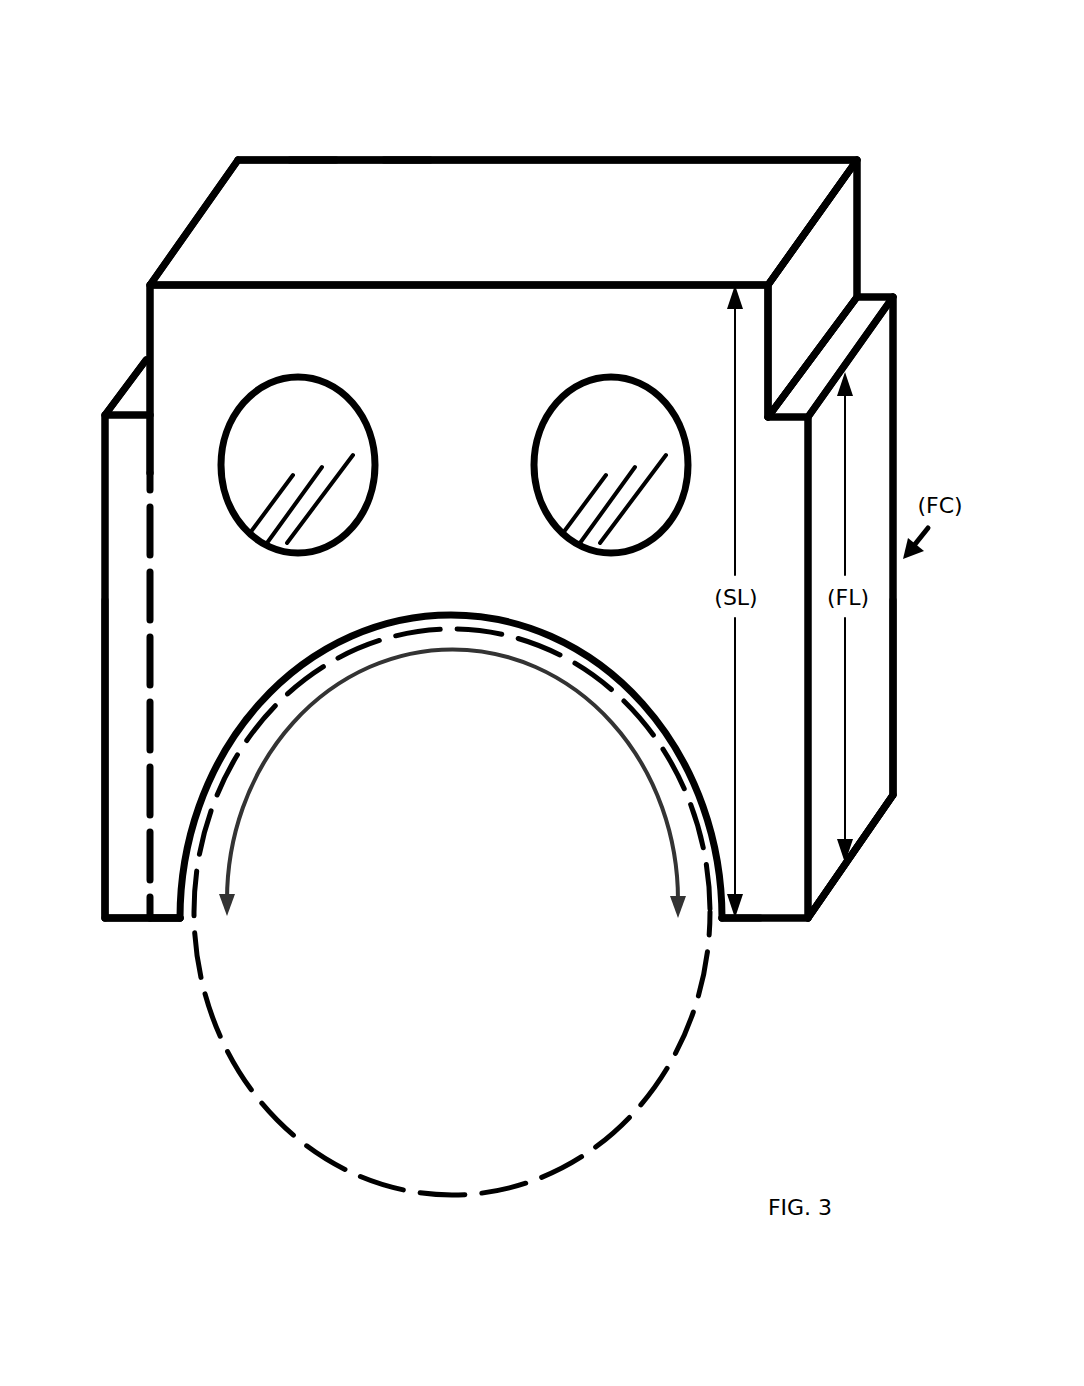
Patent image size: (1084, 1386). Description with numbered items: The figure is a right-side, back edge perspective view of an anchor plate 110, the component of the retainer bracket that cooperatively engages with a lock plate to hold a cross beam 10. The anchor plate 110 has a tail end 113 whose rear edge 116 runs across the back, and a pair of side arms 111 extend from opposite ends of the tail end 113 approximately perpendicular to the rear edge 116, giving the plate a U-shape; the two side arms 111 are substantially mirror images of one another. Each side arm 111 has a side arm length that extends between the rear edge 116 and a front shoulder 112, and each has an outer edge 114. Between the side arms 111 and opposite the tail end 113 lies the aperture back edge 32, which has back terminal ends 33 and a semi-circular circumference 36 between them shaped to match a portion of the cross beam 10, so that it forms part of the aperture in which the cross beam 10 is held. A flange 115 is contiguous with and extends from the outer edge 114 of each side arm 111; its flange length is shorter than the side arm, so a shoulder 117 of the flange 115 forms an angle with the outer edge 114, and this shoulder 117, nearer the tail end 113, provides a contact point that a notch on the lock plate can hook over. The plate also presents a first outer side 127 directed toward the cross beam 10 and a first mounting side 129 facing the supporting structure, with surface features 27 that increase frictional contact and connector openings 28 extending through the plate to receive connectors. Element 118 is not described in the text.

The cross beam 10 is at (685, 1030).
The surface features 27 is at (503, 175).
The connector openings 28 is at (257, 428).
The aperture back edge 32 is at (447, 610).
The back terminal ends 33 is at (155, 923).
The circumference 36 is at (452, 783).
The anchor plate 110 is at (250, 88).
The side arms 111 is at (172, 818).
The front shoulder 112 is at (120, 923).
The tail end 113 is at (313, 198).
The outer edge 114 is at (837, 247).
The flange 115 is at (875, 437).
The rear edge 116 is at (407, 187).
The shoulder 117 is at (863, 310).
The rear edge 118 is at (864, 682).
The first outer side 127 is at (573, 333).
The first mounting side 129 is at (607, 158).